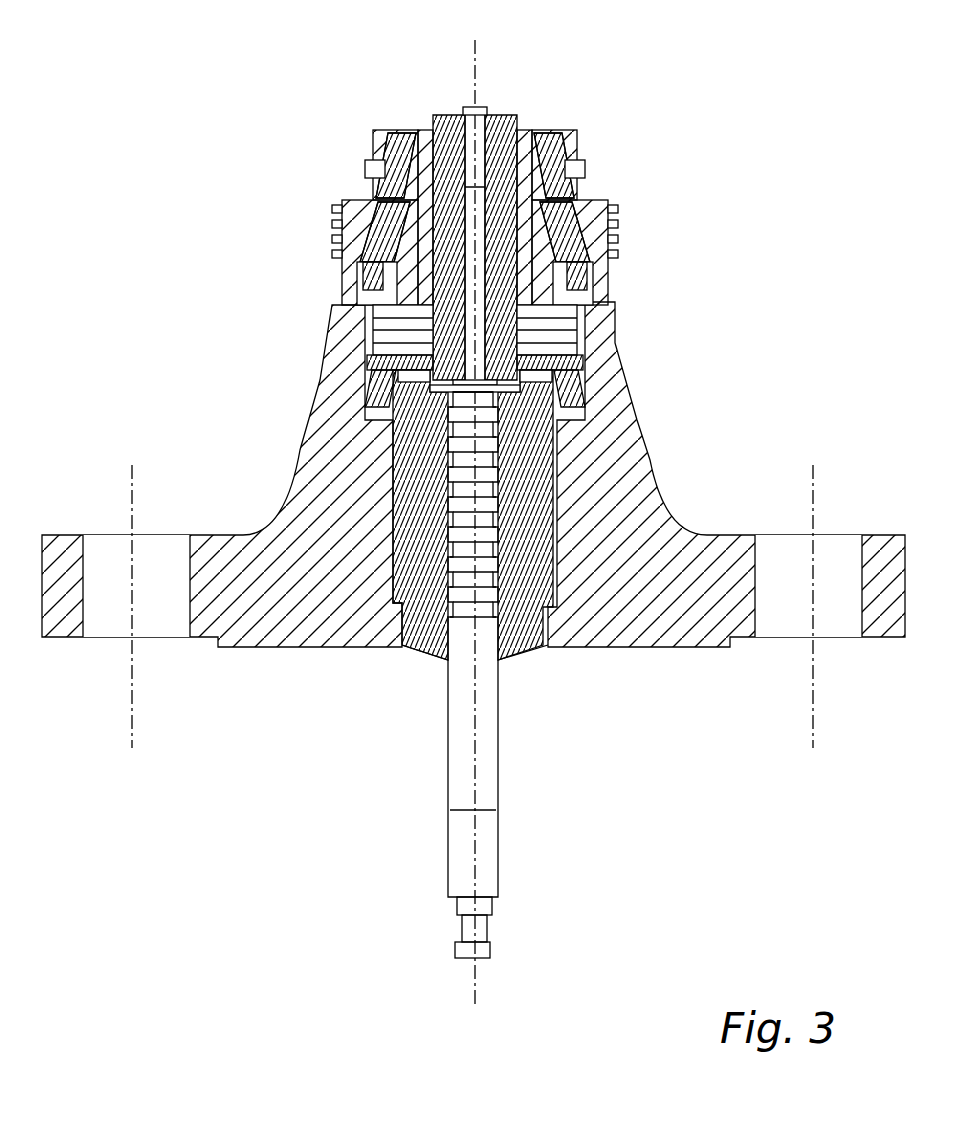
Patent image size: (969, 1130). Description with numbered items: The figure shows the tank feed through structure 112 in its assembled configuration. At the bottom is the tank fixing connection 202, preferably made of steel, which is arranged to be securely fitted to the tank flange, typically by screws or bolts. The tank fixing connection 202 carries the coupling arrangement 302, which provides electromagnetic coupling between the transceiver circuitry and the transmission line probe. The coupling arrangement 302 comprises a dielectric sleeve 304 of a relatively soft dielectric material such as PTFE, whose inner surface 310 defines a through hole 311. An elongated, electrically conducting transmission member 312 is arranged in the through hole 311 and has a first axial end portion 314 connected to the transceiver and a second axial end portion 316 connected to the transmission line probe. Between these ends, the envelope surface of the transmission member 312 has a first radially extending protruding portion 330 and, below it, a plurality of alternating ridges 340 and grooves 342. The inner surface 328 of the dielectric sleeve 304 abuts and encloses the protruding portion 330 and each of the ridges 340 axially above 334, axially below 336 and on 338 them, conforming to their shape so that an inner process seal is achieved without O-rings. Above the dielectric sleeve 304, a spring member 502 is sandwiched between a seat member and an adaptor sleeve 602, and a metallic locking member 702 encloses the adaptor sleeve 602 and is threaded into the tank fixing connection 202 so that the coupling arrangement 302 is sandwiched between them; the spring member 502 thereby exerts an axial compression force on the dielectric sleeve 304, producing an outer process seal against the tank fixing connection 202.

The tank feed through structure 112 is at (733, 303).
The tank fixing connection 202 is at (712, 492).
The coupling arrangement 302 is at (403, 678).
The dielectric sleeve 304 is at (525, 652).
The inner surface 310 is at (480, 187).
The through hole 311 is at (490, 265).
The transmission member 312 is at (490, 765).
The first axial end portion 314 is at (480, 104).
The second axial end portion 316 is at (482, 958).
The inner surface 328 is at (553, 418).
The first radially extending protruding portion 330 is at (583, 347).
The axially above 334 is at (380, 392).
The axially below 336 is at (403, 393).
The on 338 is at (380, 390).
The ridges 340 is at (497, 447).
The grooves 342 is at (487, 510).
The spring member 502 is at (372, 302).
The adaptor sleeve 602 is at (415, 290).
The metallic locking member 702 is at (390, 130).